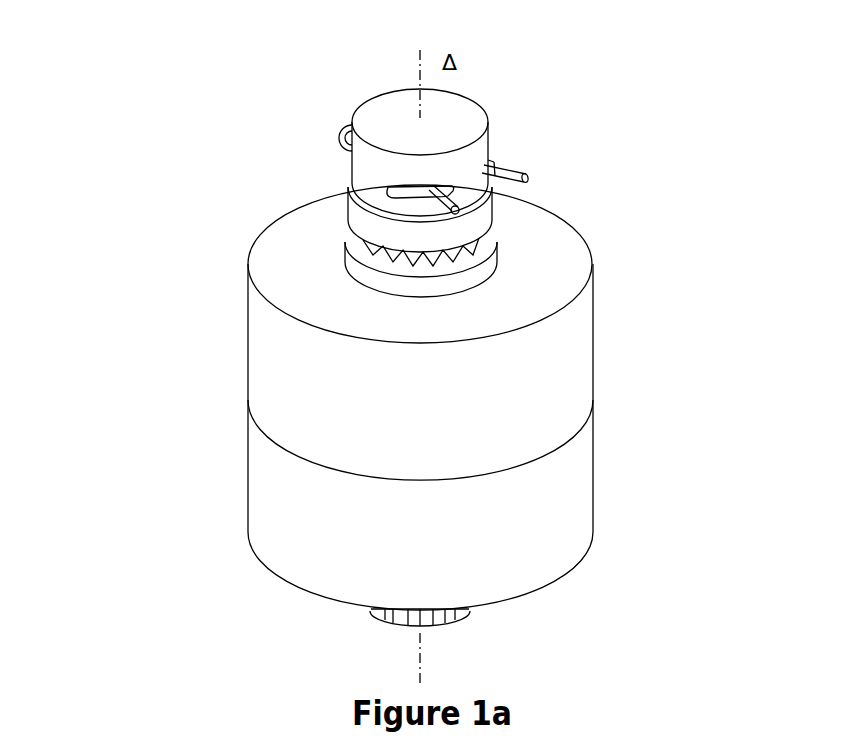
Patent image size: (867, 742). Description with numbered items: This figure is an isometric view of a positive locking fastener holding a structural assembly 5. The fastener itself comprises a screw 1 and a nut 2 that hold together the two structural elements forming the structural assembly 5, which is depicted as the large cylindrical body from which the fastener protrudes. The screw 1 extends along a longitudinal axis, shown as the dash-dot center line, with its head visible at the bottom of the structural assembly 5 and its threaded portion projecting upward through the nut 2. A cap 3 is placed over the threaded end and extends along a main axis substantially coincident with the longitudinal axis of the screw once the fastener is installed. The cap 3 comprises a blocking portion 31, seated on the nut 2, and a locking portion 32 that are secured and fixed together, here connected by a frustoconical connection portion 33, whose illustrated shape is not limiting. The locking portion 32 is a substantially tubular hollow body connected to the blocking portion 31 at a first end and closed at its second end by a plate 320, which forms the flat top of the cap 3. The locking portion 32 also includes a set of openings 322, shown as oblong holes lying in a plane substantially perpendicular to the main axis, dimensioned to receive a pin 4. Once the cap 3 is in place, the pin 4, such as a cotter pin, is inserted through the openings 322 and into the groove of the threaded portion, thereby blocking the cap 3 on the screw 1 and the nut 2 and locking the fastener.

The screw 1 is at (398, 622).
The nut 2 is at (375, 278).
The cap 3 is at (410, 153).
The pin 4 is at (318, 140).
The structural assembly 5 is at (607, 388).
The blocking portion 31 is at (478, 218).
The locking portion 32 is at (483, 157).
The frustoconical connection portion 33 is at (393, 190).
The plate 320 is at (412, 121).
The openings 322 is at (405, 194).